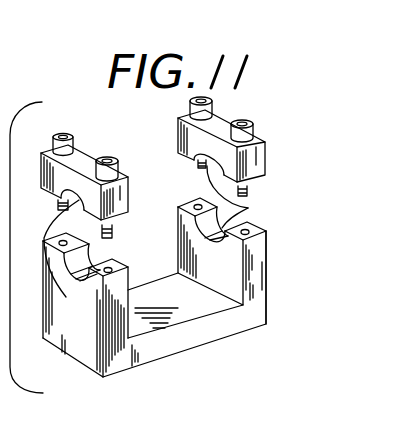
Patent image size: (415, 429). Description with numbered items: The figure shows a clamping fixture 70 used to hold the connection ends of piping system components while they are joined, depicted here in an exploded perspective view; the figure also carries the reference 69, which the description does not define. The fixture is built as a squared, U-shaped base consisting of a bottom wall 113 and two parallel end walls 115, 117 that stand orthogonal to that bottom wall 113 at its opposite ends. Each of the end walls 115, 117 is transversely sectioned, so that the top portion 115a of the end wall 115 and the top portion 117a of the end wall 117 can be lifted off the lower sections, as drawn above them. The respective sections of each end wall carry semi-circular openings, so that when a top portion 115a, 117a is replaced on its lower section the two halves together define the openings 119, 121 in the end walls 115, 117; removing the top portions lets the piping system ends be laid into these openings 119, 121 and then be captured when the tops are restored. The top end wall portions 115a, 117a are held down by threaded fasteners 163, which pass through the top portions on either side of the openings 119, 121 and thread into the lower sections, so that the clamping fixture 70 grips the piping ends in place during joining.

The fiber holder assembly 69 is at (21, 224).
The clamping fixture 70 is at (182, 301).
The bottom wall 113 is at (213, 335).
The end wall 115 is at (123, 293).
The top portion of end wall 115a is at (127, 188).
The end wall 117 is at (258, 270).
The top portion of end wall 117a is at (259, 163).
The opening 119 is at (85, 305).
The opening 121 is at (248, 208).
The threaded fasteners 163 is at (232, 134).